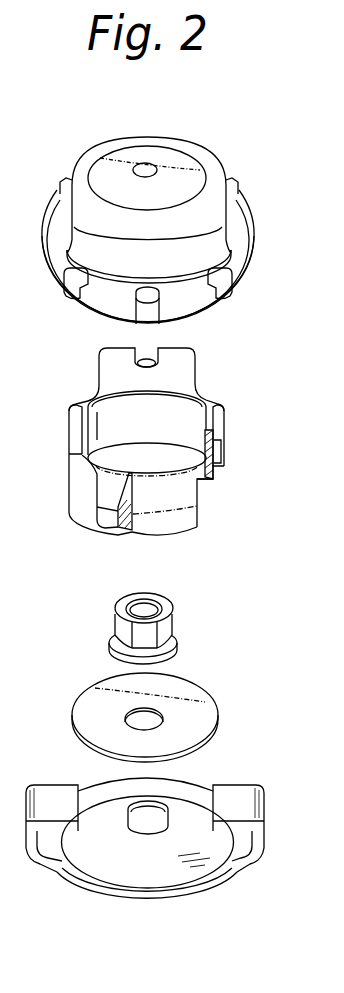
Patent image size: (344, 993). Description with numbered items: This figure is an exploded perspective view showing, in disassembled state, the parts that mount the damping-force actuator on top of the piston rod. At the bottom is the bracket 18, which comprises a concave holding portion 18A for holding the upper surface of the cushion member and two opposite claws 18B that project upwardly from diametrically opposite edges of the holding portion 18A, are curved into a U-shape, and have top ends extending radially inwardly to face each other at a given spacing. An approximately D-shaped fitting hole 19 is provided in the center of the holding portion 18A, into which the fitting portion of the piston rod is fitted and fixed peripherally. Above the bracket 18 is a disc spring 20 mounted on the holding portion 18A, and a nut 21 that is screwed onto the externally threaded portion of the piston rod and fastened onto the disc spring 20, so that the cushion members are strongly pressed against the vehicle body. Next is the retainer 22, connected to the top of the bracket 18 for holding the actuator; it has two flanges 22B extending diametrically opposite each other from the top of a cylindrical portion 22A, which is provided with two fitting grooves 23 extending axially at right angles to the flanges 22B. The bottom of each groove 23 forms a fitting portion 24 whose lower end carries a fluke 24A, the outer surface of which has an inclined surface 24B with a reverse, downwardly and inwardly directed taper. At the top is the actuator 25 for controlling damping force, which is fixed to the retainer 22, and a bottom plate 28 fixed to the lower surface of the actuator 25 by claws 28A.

The bracket 18 is at (156, 842).
The holding portion 18A is at (183, 870).
The claws 18B is at (55, 798).
The fitting hole 19 is at (150, 812).
The disc spring 20 is at (80, 710).
The nut 21 is at (170, 621).
The retainer 22 is at (151, 450).
The cylindrical portion 22A is at (78, 491).
The flanges 22B is at (110, 363).
The fitting grooves 23 is at (78, 424).
The fitting portion 24 is at (213, 441).
The fluke 24A is at (224, 468).
The inclined surface 24B is at (214, 480).
The actuator 25 is at (216, 183).
The bottom plate 28 is at (185, 319).
The claws 28A is at (222, 284).